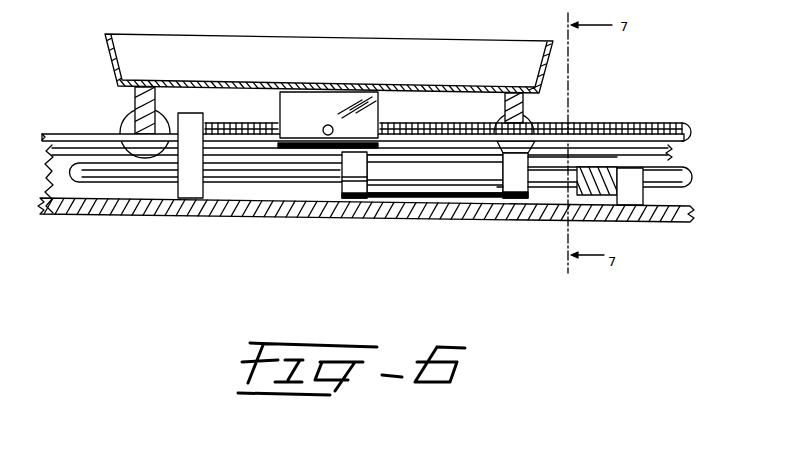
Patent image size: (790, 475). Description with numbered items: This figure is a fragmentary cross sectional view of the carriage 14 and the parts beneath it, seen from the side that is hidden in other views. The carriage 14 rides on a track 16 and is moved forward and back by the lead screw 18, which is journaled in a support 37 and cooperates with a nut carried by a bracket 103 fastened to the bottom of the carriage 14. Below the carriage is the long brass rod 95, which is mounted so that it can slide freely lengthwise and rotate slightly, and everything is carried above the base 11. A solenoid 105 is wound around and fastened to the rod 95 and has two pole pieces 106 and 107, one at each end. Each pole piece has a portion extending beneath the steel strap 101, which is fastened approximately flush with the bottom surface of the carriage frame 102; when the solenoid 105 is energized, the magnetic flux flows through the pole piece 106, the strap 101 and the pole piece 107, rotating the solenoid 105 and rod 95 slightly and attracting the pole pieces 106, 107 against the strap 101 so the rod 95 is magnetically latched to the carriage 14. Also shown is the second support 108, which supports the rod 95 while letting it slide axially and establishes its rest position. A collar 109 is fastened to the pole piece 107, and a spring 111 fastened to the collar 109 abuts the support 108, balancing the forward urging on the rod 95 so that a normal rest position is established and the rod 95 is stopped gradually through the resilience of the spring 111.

The carriage 14 is at (107, 46).
The steel strap 101 is at (91, 134).
The carriage frame 102 is at (503, 108).
The bracket 103 is at (292, 103).
The lead screw 18 is at (642, 123).
The track 16 is at (46, 178).
The base 11 is at (96, 214).
The rod 95 is at (130, 182).
The support 37 is at (190, 192).
The pole piece 106 is at (335, 195).
The solenoid 105 is at (423, 190).
The pole piece 107 is at (497, 190).
The collar 109 is at (560, 190).
The spring 111 is at (590, 193).
The second support 108 is at (634, 200).